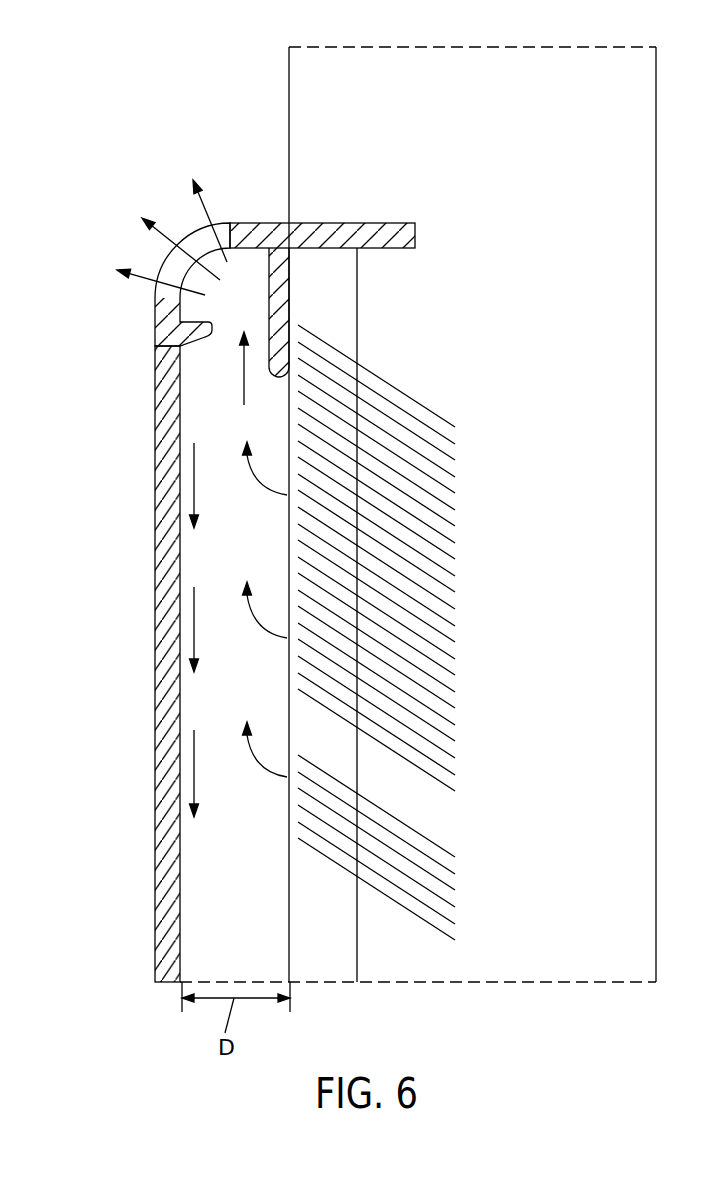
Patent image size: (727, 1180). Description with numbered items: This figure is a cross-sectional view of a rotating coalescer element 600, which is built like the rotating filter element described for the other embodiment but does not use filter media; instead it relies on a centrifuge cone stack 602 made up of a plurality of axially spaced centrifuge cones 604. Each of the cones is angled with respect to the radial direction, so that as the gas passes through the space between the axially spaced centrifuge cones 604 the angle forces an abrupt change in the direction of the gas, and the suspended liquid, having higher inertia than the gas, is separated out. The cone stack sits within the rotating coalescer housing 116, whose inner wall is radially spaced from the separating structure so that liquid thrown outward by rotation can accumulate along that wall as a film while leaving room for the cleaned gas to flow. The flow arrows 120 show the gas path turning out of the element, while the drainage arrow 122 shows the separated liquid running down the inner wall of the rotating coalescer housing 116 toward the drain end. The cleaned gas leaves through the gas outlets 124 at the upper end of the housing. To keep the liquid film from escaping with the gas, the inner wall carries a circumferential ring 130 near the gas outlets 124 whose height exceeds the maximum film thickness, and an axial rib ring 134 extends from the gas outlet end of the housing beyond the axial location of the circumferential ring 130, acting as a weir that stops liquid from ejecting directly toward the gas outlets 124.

The rotating coalescer element 600 is at (113, 60).
The rotating coalescer housing 116 is at (160, 563).
The flow arrows 120 is at (157, 243).
The drainage arrow 122 is at (193, 490).
The gas outlets 124 is at (155, 310).
The circumferential ring 130 is at (155, 335).
The axial rib ring 134 is at (282, 273).
The centrifuge cone stack 602 is at (443, 375).
The axially spaced centrifuge cones 604 is at (455, 672).